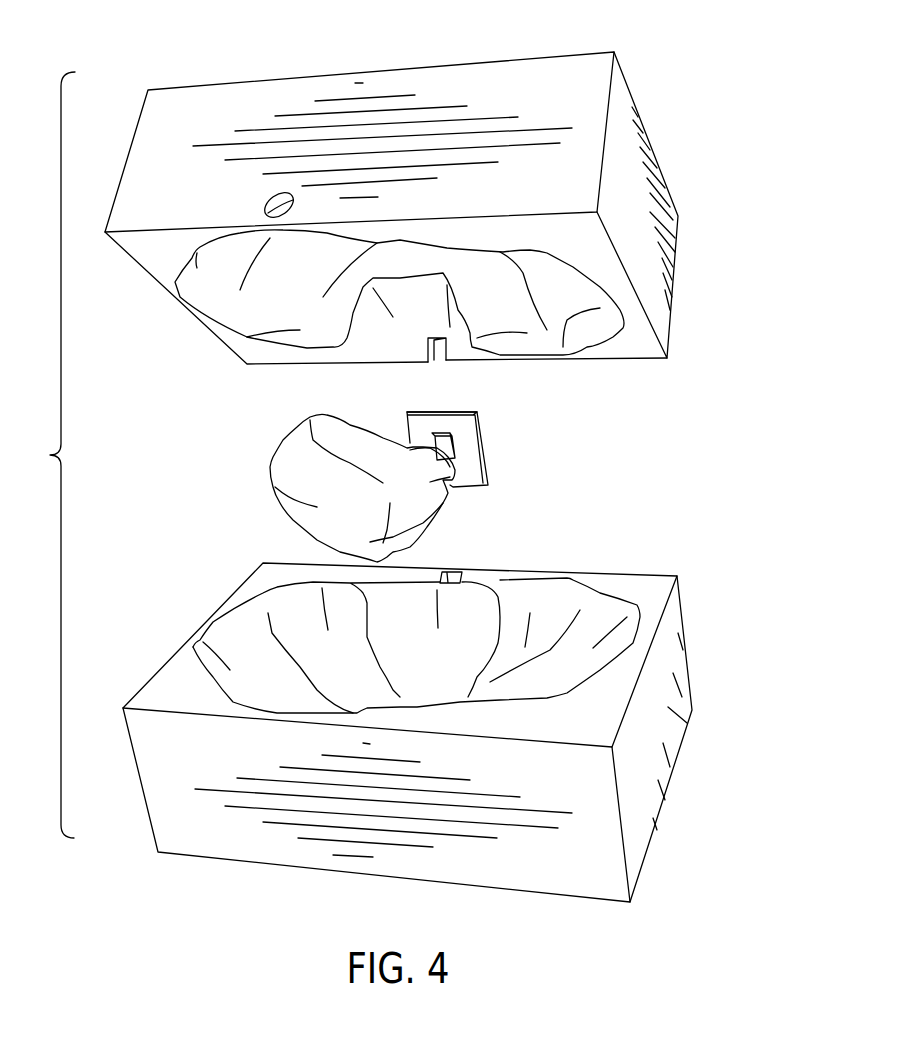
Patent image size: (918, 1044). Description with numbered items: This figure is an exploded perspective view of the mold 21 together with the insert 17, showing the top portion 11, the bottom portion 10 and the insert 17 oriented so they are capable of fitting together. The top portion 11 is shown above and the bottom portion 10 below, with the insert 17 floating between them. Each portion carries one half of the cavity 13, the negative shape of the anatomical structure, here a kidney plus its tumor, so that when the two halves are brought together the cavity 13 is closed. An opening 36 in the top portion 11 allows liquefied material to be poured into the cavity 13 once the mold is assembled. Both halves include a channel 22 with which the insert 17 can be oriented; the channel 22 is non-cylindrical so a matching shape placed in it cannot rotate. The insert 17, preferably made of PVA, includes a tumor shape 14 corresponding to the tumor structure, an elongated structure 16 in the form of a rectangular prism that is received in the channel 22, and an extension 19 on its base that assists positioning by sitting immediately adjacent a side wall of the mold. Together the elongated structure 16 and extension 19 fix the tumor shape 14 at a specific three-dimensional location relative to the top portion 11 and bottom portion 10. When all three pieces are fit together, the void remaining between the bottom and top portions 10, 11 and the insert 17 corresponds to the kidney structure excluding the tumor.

The bottom portion 10 is at (703, 635).
The top portion 11 is at (698, 163).
The cavity 13 is at (300, 296).
The tumor shape 14 is at (490, 483).
The elongated structure 16 is at (453, 448).
The insert 17 is at (262, 440).
The extension 19 is at (437, 408).
The mold 21 is at (44, 455).
The channel 22 is at (438, 353).
The opening 36 is at (282, 196).